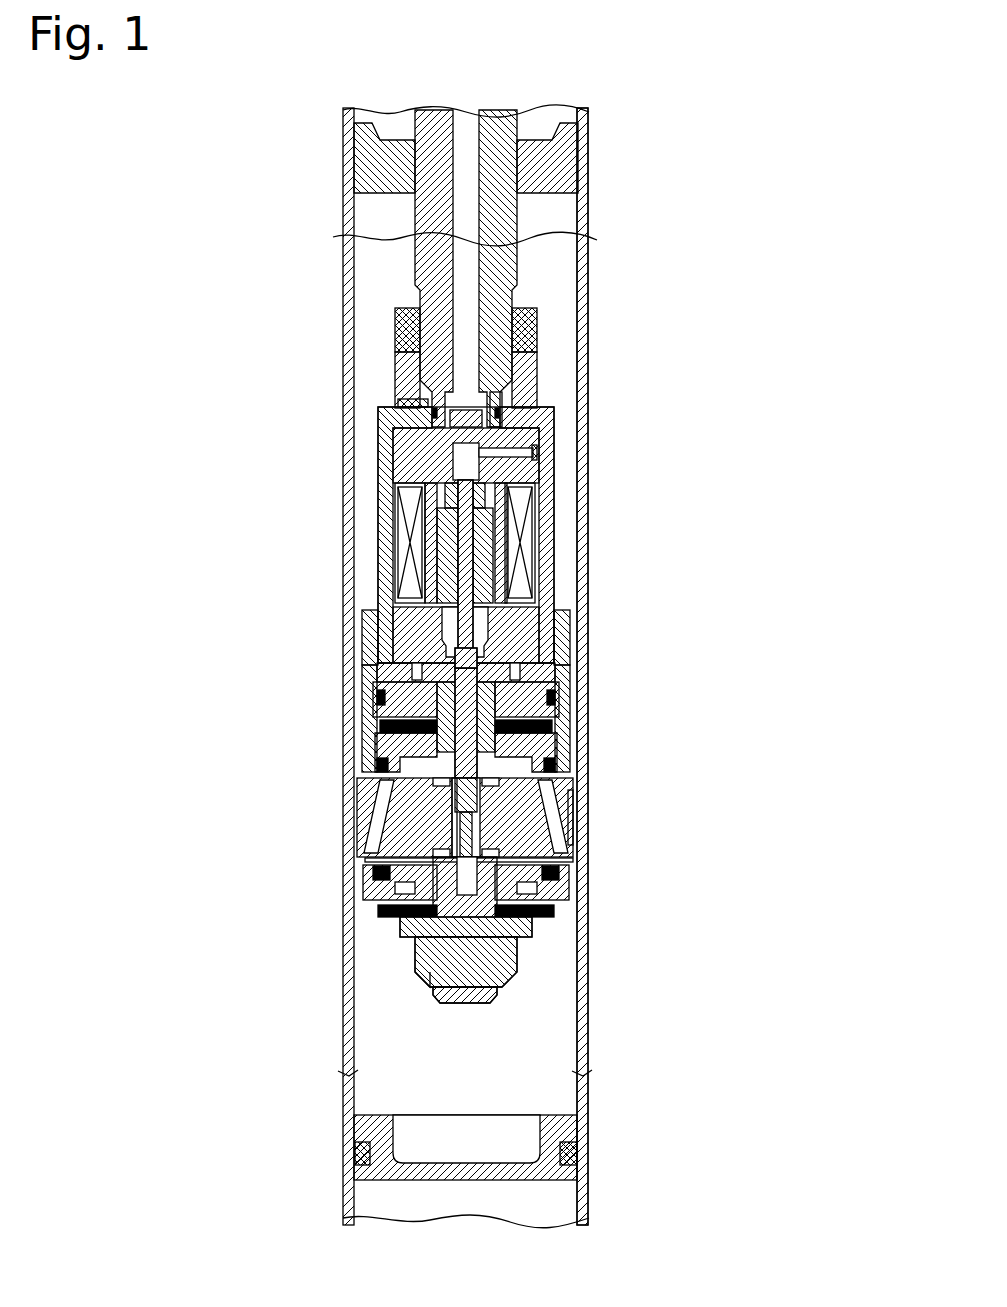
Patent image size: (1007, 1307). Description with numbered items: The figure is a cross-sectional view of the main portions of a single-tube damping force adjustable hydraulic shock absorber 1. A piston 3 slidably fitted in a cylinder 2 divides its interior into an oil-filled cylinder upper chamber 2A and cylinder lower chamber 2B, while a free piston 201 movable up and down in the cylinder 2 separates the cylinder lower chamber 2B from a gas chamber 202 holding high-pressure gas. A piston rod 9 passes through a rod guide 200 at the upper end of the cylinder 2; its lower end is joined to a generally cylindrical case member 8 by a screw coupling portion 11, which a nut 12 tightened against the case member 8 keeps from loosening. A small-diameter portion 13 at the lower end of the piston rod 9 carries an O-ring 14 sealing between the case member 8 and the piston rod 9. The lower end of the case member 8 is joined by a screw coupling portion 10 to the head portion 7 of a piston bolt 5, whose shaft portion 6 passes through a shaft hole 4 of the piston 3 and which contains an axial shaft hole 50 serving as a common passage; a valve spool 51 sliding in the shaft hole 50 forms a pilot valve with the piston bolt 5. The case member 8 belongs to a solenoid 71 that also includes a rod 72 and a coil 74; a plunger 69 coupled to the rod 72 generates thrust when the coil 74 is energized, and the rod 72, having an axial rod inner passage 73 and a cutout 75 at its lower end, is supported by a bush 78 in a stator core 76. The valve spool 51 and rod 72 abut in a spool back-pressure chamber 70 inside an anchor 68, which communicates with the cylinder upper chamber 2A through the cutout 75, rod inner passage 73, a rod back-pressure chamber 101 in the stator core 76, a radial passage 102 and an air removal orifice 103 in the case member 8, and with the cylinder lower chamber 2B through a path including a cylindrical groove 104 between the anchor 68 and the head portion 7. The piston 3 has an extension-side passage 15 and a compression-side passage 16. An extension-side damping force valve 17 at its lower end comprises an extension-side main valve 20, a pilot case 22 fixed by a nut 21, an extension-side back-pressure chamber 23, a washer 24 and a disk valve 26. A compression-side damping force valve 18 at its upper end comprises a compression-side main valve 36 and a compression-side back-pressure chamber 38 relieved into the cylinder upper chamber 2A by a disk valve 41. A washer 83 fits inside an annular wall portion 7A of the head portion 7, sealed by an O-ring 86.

The shock absorber 1 is at (751, 133).
The cylinder 2 is at (583, 272).
The cylinder upper chamber 2A is at (540, 221).
The cylinder lower chamber 2B is at (535, 1020).
The rod guide 200 is at (592, 150).
The piston rod 9 is at (428, 258).
The nut 12 is at (530, 333).
The screw coupling portion 11 is at (535, 362).
The O-ring 14 is at (400, 400).
The small-diameter portion 13 is at (508, 400).
The stator core 76 is at (410, 430).
The case member 8 is at (366, 458).
The passage 102 is at (480, 432).
The bush 78 is at (415, 443).
The rod back-pressure chamber 101 is at (470, 472).
The air removal orifice 103 is at (549, 456).
The solenoid 71 is at (381, 527).
The coil 74 is at (527, 545).
The rod 72 is at (398, 508).
The plunger 69 is at (495, 538).
The rod inner passage 73 is at (437, 540).
The spool back-pressure chamber 70 is at (440, 635).
The cutout 75 is at (460, 650).
The anchor 68 is at (400, 612).
The screw coupling portion 10 is at (568, 620).
The annular wall portion 7A is at (565, 650).
The head portion 7 is at (577, 671).
The cylindrical groove 104 is at (455, 665).
The O-ring 86 is at (555, 690).
The disk valve 41 is at (385, 725).
The washer 83 is at (555, 715).
The compression-side back-pressure chamber 38 is at (380, 750).
The compression-side damping force valve 18 is at (574, 742).
The compression-side main valve 36 is at (553, 770).
The piston 3 is at (343, 821).
The compression-side passage 16 is at (400, 825).
The extension-side passage 15 is at (548, 828).
The shaft hole 4 is at (585, 826).
The valve spool 51 is at (450, 835).
The extension-side main valve 20 is at (577, 867).
The piston bolt 5 is at (495, 1010).
The extension-side damping force valve 17 is at (392, 886).
The extension-side back-pressure chamber 23 is at (560, 885).
The disk valve 26 is at (400, 905).
The pilot case 22 is at (555, 903).
The washer 24 is at (410, 925).
The shaft portion 6 is at (463, 1003).
The shaft hole 50 is at (447, 990).
The nut 21 is at (425, 985).
The free piston 201 is at (570, 1128).
The gas chamber 202 is at (555, 1210).